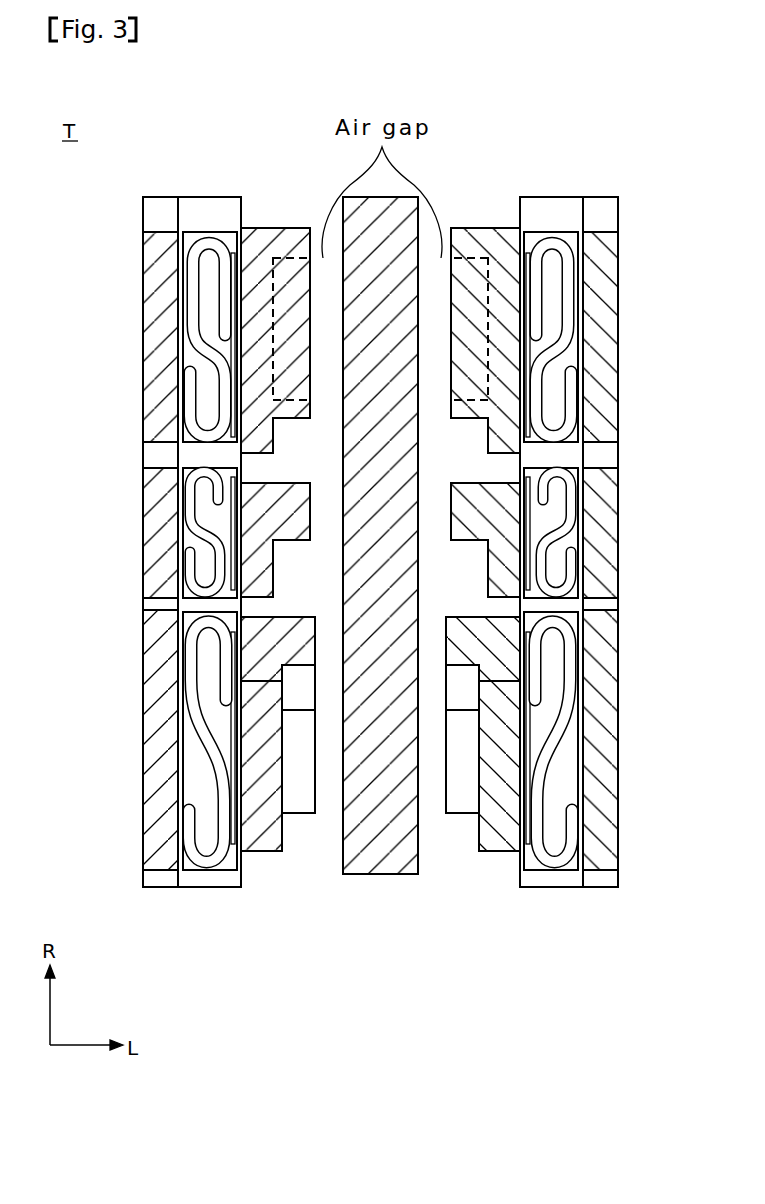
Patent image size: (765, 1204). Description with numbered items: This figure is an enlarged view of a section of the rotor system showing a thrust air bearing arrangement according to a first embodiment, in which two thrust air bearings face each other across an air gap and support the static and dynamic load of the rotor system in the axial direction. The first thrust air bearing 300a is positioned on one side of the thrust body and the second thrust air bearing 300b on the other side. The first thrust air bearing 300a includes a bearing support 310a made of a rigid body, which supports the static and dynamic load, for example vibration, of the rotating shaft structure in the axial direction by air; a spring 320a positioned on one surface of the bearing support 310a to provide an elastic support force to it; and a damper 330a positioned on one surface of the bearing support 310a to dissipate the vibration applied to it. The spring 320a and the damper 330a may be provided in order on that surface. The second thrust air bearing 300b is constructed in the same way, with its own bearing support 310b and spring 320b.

The first thrust air bearing 300a is at (215, 607).
The bearing support 310a is at (278, 604).
The spring 320a is at (222, 872).
The damper 330a is at (162, 872).
The second thrust air bearing 300b is at (598, 872).
The bearing support 310b is at (483, 604).
The spring 320b is at (541, 872).